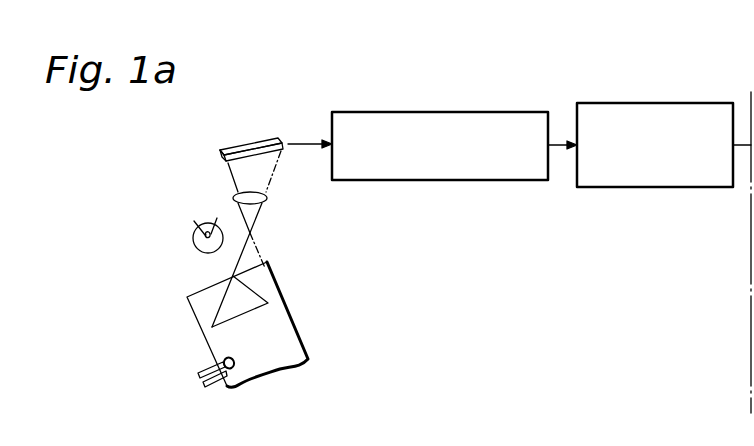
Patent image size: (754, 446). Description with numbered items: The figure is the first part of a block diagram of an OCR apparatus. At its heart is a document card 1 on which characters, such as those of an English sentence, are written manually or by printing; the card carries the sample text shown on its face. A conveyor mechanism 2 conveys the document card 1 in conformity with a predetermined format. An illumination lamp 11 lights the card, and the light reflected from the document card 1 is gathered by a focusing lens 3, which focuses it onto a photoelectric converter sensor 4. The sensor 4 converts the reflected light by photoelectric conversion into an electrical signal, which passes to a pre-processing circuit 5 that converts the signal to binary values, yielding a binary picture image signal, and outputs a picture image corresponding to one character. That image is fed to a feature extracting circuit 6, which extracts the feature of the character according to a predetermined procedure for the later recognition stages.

The document card 1 is at (280, 286).
The conveyor mechanism 2 is at (204, 386).
The focusing lens 3 is at (268, 198).
The photoelectric converter sensor 4 is at (271, 139).
The pre-processing circuit 5 is at (548, 119).
The feature extracting circuit 6 is at (735, 120).
The illumination lamp 11 is at (193, 243).